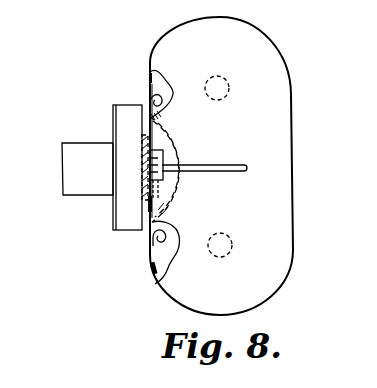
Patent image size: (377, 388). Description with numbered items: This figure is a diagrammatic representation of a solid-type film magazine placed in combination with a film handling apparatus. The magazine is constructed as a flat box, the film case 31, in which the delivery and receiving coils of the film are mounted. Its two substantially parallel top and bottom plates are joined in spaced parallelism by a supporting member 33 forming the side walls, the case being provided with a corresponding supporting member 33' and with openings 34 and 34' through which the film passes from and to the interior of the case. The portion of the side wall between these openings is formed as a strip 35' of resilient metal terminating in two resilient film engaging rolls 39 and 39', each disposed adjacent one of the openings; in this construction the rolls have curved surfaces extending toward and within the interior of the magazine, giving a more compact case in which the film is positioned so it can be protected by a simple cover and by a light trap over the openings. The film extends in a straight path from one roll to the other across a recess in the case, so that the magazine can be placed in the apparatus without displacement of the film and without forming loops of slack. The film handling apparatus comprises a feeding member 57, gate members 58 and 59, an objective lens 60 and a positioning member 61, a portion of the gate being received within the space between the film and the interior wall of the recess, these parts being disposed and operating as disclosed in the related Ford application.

The film case 31 is at (281, 43).
The supporting member 33 is at (237, 90).
The aperture 33' is at (239, 233).
The opening 34 is at (132, 94).
The lug 34' is at (141, 257).
The curved spring member 35' is at (181, 167).
The resilient film engaging roll 39 is at (177, 81).
The hook 39' is at (134, 248).
The feeding member 57 is at (176, 153).
The gate member 58 is at (158, 219).
The gate member 59 is at (140, 143).
The objective lens 60 is at (68, 173).
The positioning member 61 is at (239, 165).